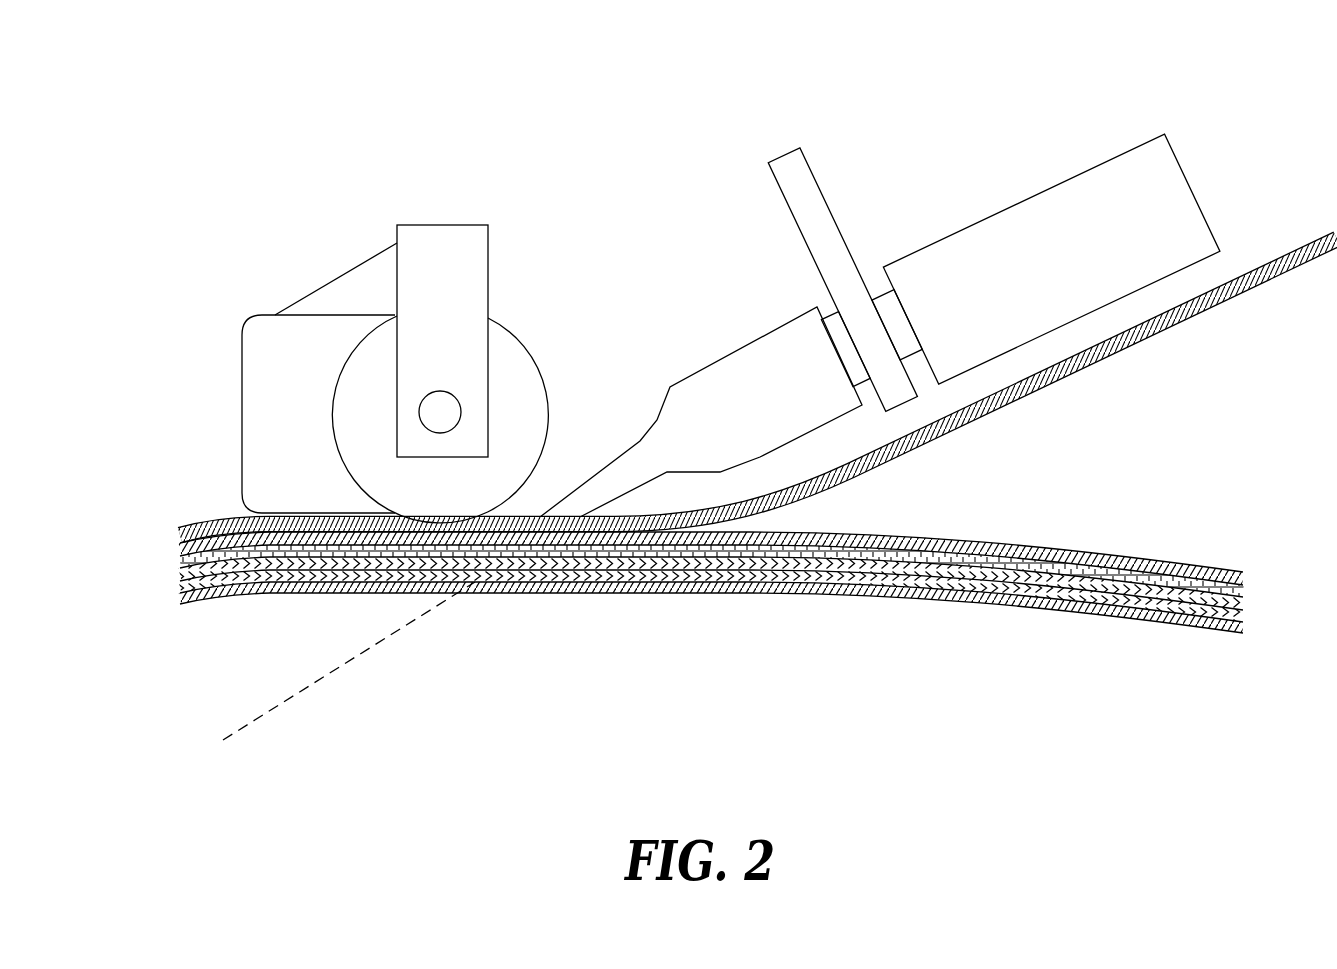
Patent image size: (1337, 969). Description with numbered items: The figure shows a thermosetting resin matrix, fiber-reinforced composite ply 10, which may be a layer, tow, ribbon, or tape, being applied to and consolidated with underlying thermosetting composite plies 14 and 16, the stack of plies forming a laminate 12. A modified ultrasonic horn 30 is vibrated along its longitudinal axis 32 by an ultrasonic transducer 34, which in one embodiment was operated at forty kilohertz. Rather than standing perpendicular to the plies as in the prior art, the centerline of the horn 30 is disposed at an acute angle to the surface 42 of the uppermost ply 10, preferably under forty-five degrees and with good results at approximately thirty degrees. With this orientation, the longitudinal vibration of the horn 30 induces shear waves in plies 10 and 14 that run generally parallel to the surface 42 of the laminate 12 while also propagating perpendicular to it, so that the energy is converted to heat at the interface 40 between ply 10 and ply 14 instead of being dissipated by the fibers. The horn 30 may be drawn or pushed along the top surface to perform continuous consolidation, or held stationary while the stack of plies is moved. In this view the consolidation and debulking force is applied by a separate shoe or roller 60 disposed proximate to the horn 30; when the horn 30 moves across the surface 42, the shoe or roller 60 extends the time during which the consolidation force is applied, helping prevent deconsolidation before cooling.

The composite ply 10 is at (1284, 246).
The laminate 12 is at (758, 560).
The composite ply 14 is at (1145, 550).
The composite ply 16 is at (1253, 601).
The ultrasonic horn 30 is at (713, 387).
The longitudinal axis 32 is at (305, 684).
The ultrasonic transducer 34 is at (1076, 173).
The interface 40 is at (733, 525).
The surface 42 is at (240, 512).
The shoe or roller 60 is at (277, 365).